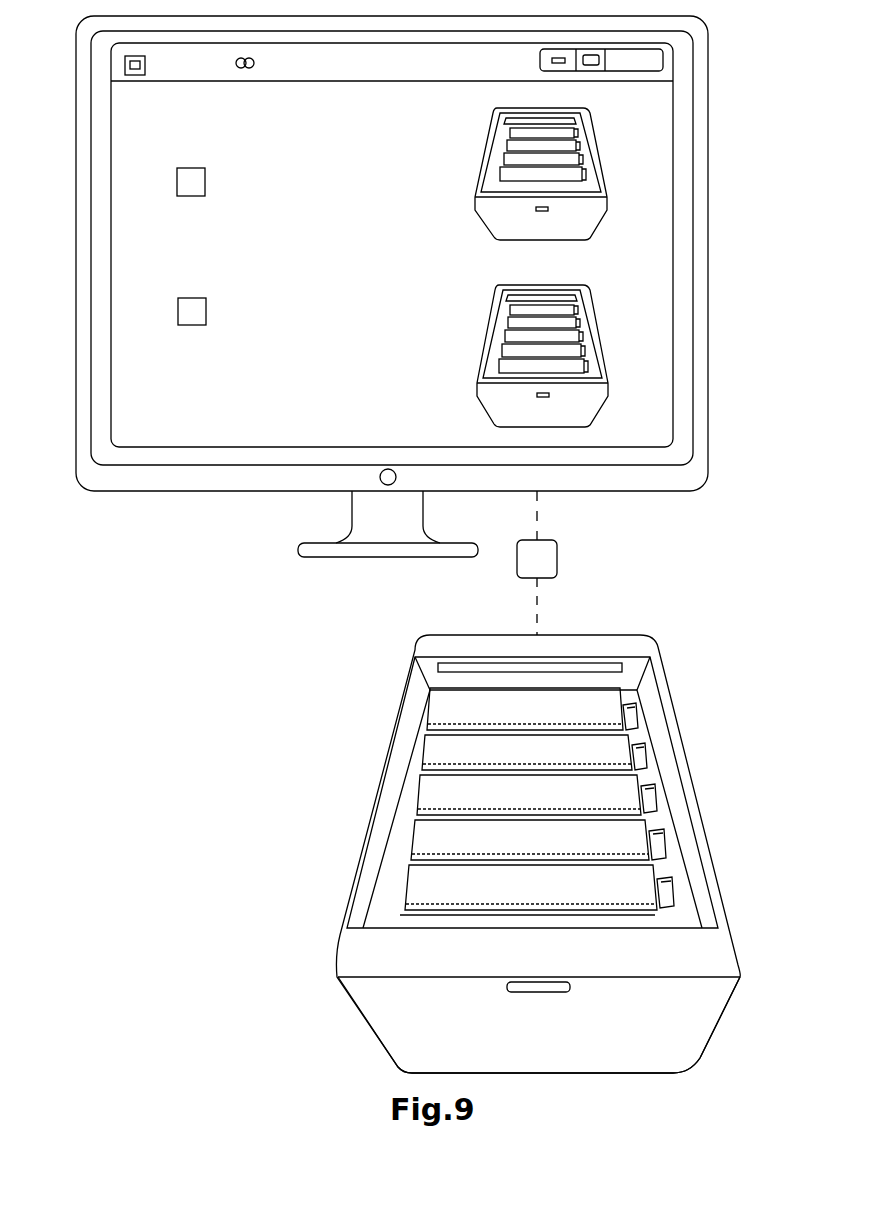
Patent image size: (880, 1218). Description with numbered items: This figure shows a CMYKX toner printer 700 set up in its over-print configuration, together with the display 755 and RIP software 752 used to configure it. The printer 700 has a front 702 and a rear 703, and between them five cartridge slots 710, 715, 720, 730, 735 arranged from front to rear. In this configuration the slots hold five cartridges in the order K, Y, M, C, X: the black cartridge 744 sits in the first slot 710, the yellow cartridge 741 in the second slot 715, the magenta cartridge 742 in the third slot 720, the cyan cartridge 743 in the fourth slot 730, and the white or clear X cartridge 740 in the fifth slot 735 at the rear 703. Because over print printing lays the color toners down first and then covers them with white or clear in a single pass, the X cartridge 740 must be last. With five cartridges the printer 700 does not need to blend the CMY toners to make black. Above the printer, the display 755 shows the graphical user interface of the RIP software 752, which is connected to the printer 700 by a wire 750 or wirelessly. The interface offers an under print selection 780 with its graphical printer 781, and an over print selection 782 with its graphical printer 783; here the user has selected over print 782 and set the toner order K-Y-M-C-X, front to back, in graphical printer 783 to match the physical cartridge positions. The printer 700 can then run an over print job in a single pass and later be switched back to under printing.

The printer 700 is at (383, 1045).
The front 702 is at (670, 1027).
The rear 703 is at (655, 633).
The first cartridge slot 710 is at (673, 893).
The second cartridge slot 715 is at (663, 838).
The third cartridge slot 720 is at (653, 793).
The fourth cartridge slot 730 is at (643, 752).
The fifth cartridge slot 735 is at (635, 710).
The X cartridge 740 is at (460, 712).
The yellow cartridge 741 is at (490, 840).
The magenta cartridge 742 is at (480, 793).
The cyan cartridge 743 is at (493, 750).
The black cartridge 744 is at (503, 895).
The wire 750 is at (537, 613).
The RIP software 752 is at (557, 552).
The display 755 is at (652, 415).
The under print selection 780 is at (170, 184).
The graphical printer for under print 781 is at (608, 138).
The over print selection 782 is at (170, 313).
The graphical printer for over print 783 is at (612, 338).